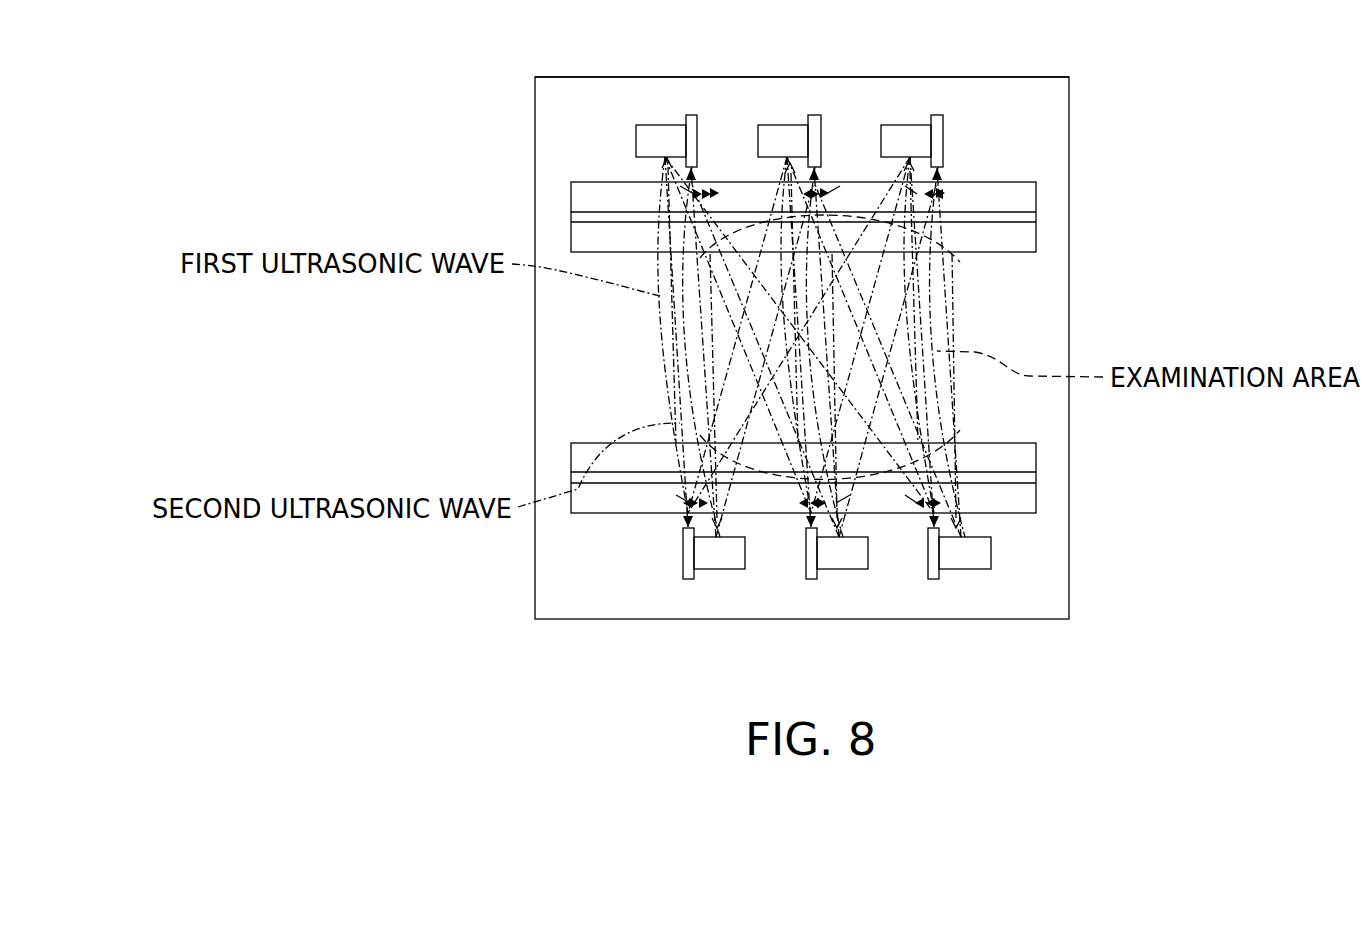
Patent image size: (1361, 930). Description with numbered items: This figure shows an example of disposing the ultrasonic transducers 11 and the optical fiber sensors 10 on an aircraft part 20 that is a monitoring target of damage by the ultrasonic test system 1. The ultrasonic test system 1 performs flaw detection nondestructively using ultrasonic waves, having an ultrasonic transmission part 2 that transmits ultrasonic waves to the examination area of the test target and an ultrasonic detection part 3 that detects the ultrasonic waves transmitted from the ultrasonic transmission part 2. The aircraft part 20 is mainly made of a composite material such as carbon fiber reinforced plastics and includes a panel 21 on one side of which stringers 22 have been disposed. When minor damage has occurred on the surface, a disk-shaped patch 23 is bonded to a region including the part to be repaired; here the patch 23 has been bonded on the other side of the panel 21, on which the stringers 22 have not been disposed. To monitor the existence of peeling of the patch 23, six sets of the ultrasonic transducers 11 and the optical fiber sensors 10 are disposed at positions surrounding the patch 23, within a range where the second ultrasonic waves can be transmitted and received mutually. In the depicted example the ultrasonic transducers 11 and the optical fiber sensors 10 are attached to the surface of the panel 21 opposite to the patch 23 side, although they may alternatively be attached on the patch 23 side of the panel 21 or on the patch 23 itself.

The ultrasonic test system 1 is at (901, 125).
The ultrasonic transmission part 2 is at (773, 125).
The ultrasonic detection part 3 is at (815, 115).
The optical fiber sensor 10 is at (692, 115).
The ultrasonic transducer 11 is at (650, 125).
The aircraft part 20 is at (1035, 77).
The panel 21 is at (963, 77).
The stringer 22 is at (1035, 199).
The patch 23 is at (937, 407).